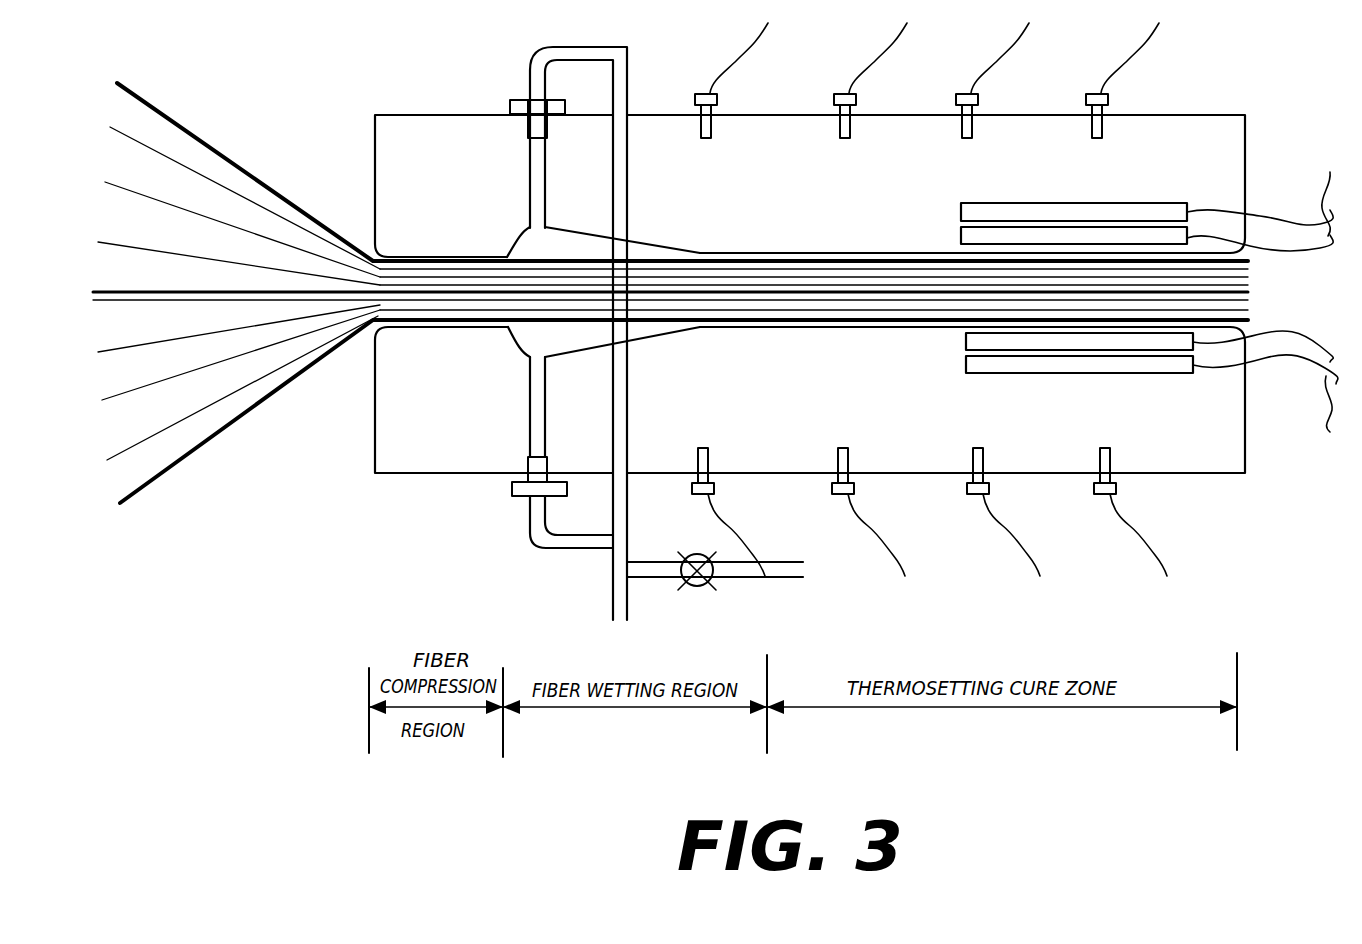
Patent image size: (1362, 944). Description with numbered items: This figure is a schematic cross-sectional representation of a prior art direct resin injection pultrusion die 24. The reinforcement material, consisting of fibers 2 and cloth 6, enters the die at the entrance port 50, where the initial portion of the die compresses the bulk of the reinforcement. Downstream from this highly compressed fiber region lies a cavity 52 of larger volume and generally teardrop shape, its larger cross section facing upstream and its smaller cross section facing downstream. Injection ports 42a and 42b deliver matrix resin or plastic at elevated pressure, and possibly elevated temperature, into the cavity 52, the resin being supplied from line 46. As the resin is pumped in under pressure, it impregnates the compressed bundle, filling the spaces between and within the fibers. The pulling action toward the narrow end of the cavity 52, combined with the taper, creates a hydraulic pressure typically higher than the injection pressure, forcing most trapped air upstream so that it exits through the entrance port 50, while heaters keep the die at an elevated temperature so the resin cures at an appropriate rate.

The fibers 2 is at (223, 400).
The cloth 6 is at (193, 130).
The resin injection pultrusion die 24 is at (410, 474).
The injection port 42a is at (518, 349).
The injection port 42b is at (525, 229).
The line 46 is at (612, 602).
The entrance port 50 is at (378, 326).
The cavity 52 is at (562, 334).